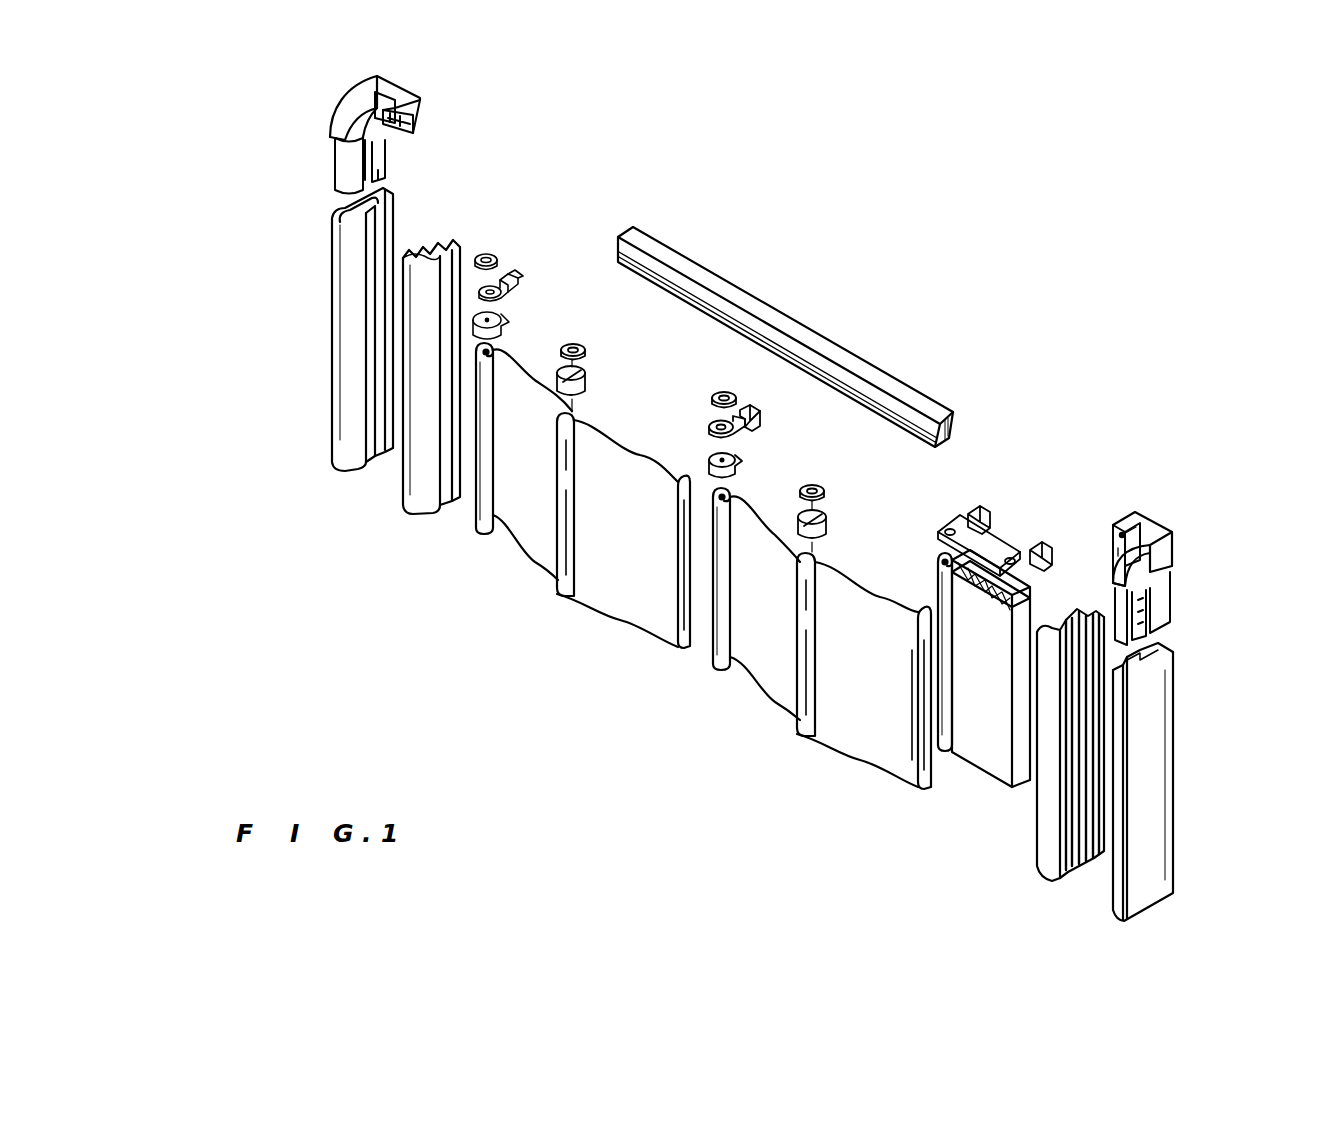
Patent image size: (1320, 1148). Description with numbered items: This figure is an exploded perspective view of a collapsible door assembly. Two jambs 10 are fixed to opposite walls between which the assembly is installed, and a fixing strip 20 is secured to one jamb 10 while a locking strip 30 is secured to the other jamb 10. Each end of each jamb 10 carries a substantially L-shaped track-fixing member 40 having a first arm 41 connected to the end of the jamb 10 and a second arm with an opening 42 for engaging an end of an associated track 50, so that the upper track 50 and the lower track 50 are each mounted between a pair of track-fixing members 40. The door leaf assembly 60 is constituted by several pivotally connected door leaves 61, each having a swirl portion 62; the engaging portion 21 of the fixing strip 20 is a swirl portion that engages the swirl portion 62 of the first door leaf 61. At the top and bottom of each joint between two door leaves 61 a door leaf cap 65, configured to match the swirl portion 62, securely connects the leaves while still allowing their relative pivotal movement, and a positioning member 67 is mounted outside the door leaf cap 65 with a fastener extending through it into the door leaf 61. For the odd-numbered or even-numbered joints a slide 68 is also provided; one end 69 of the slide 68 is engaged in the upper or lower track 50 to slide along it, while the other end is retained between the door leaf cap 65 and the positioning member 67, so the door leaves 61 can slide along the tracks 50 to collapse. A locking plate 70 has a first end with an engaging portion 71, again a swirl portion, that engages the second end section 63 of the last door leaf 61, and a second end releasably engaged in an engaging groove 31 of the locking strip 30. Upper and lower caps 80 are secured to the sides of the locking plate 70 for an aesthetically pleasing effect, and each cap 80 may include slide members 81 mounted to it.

The jamb 10 is at (337, 323).
The fixing strip 20 is at (399, 343).
The engaging portion 21 is at (430, 253).
The locking strip 30 is at (1036, 728).
The engaging groove 31 is at (1050, 618).
The track-fixing member 40 is at (340, 117).
The first arm 41 is at (338, 172).
The opening 42 is at (415, 110).
The track 50 is at (830, 333).
The door leaf assembly 60 is at (695, 552).
The door leaf 61 is at (850, 738).
The swirl portion 62 is at (485, 517).
The second end section 63 is at (927, 763).
The door leaf cap 65 is at (737, 455).
The positioning member 67 is at (577, 342).
The slide 68 is at (710, 423).
The end 69 is at (760, 412).
The locking plate 70 is at (998, 777).
The engaging portion 71 is at (940, 577).
The cap 80 is at (980, 548).
The slide member 81 is at (977, 510).